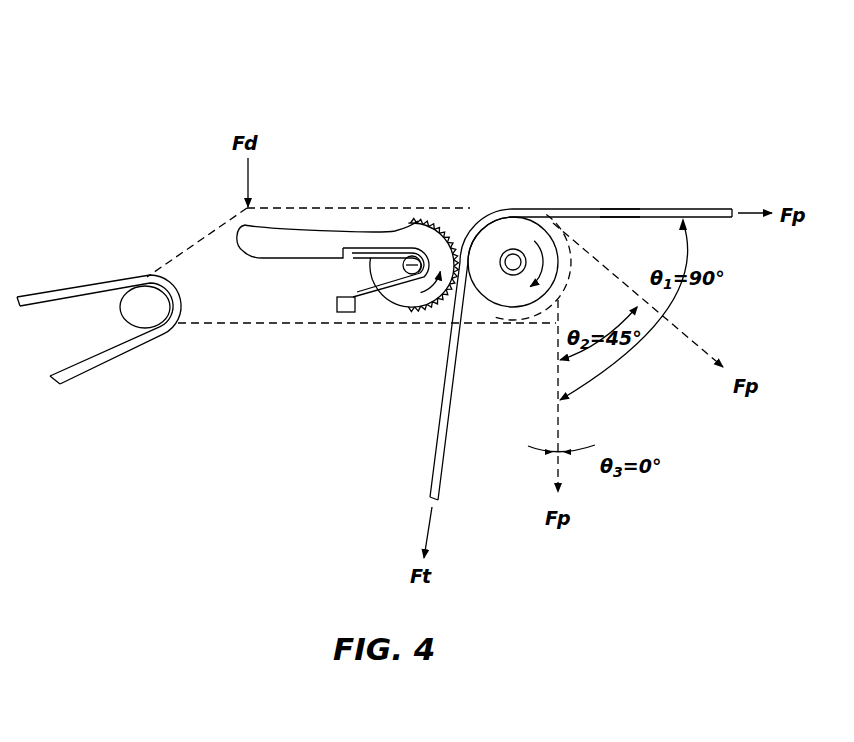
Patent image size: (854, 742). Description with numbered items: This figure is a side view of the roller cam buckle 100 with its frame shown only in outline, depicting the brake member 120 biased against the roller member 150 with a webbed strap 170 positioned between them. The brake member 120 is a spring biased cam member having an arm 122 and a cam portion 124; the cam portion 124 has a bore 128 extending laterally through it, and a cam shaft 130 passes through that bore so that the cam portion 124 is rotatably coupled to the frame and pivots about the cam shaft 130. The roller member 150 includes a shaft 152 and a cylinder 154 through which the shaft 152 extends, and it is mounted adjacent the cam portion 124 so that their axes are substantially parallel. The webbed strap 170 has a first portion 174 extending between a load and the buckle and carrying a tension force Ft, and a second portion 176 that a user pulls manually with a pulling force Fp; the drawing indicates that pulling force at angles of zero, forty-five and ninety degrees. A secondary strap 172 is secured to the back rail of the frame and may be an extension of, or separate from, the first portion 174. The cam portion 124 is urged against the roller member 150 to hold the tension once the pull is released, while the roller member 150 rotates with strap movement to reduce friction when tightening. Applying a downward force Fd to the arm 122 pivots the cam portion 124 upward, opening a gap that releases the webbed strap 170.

The roller cam buckle 100 is at (540, 87).
The brake member 120 is at (333, 213).
The arm 122 is at (283, 240).
The cam portion 124 is at (417, 257).
The bore 128 is at (411, 275).
The cam shaft 130 is at (397, 262).
The roller member 150 is at (513, 318).
The shaft 152 is at (514, 255).
The cylinder 154 is at (498, 235).
The webbed strap 170 is at (708, 207).
The secondary strap 172 is at (63, 293).
The first portion 174 is at (440, 440).
The second portion 176 is at (612, 207).